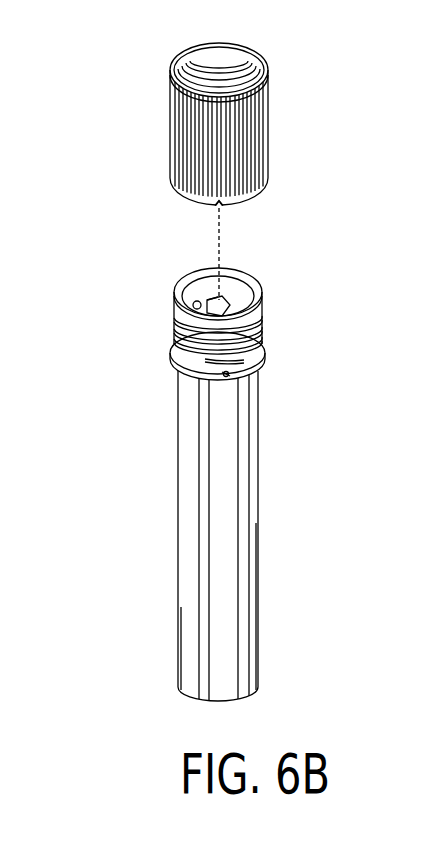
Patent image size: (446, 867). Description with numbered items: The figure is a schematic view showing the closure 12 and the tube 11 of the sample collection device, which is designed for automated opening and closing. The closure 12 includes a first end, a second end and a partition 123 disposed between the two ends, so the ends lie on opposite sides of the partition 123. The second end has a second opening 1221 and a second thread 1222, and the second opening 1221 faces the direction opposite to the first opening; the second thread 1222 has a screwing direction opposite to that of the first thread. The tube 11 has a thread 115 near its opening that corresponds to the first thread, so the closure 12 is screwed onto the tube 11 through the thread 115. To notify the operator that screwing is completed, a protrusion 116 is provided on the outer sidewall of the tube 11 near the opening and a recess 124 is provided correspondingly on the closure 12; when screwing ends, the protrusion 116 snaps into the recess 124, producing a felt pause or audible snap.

The tube 11 is at (298, 281).
The closure 12 is at (291, 123).
The thread 115 is at (263, 333).
The protrusion 116 is at (229, 375).
The partition 123 is at (170, 95).
The recess 124 is at (224, 207).
The second opening 1221 is at (229, 52).
The second thread 1222 is at (208, 67).